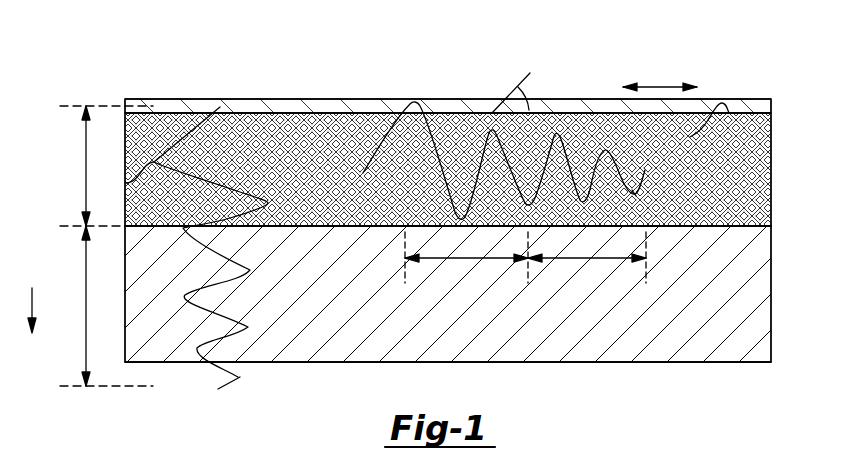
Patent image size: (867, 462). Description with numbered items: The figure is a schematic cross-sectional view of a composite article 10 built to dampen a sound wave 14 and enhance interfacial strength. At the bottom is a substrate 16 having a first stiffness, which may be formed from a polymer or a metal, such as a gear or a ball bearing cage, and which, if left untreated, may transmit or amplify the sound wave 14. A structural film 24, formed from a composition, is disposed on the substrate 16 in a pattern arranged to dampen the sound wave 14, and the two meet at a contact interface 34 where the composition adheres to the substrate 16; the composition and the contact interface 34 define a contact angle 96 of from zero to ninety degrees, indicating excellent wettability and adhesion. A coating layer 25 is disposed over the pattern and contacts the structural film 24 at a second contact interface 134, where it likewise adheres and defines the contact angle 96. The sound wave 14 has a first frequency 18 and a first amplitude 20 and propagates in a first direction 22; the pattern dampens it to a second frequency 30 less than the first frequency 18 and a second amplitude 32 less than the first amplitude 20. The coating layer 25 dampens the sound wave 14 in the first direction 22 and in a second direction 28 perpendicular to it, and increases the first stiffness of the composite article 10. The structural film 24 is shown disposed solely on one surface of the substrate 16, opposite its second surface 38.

The composite article 10 is at (101, 83).
The sound wave 14 is at (334, 80).
The substrate 16 is at (771, 280).
The first frequency 18 is at (293, 197).
The first amplitude 20 is at (126, 183).
The first direction 22 is at (32, 288).
The structural film 24 is at (771, 168).
The coating layer 25 is at (771, 106).
The second direction 28 is at (658, 86).
The second frequency 30 is at (351, 306).
The second amplitude 32 is at (238, 377).
The contact interface 34 is at (388, 228).
The second surface 38 is at (612, 365).
The contact angle 96 is at (533, 95).
The second contact interface 134 is at (690, 137).